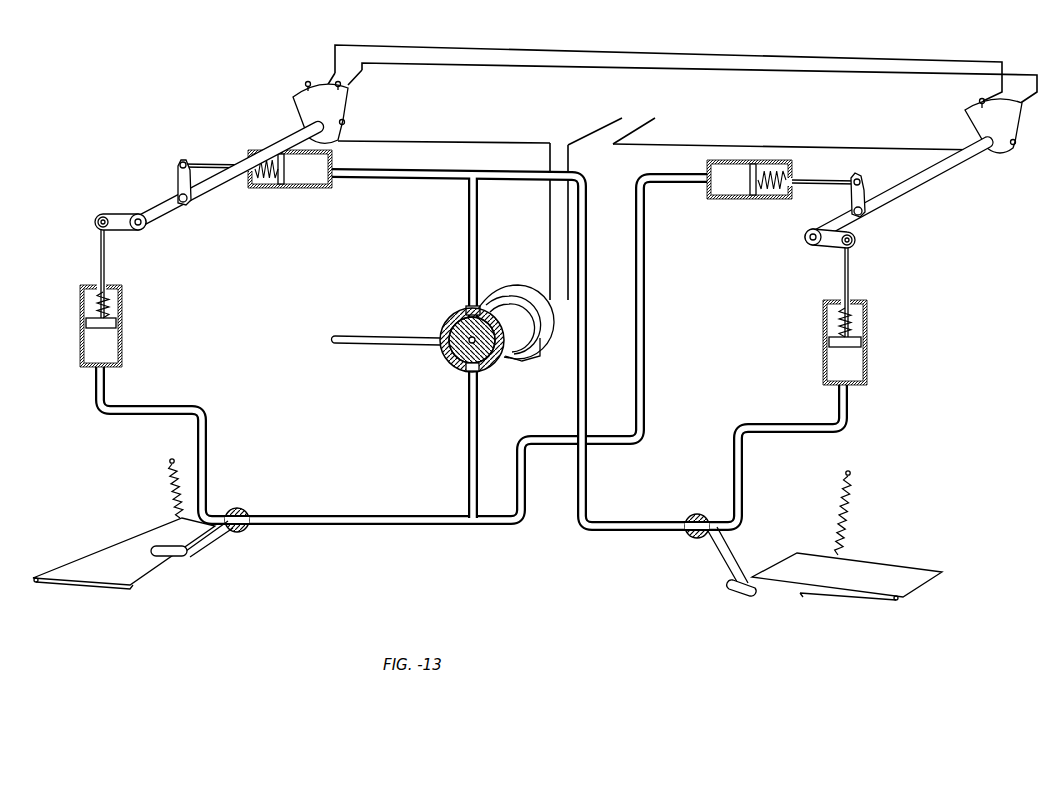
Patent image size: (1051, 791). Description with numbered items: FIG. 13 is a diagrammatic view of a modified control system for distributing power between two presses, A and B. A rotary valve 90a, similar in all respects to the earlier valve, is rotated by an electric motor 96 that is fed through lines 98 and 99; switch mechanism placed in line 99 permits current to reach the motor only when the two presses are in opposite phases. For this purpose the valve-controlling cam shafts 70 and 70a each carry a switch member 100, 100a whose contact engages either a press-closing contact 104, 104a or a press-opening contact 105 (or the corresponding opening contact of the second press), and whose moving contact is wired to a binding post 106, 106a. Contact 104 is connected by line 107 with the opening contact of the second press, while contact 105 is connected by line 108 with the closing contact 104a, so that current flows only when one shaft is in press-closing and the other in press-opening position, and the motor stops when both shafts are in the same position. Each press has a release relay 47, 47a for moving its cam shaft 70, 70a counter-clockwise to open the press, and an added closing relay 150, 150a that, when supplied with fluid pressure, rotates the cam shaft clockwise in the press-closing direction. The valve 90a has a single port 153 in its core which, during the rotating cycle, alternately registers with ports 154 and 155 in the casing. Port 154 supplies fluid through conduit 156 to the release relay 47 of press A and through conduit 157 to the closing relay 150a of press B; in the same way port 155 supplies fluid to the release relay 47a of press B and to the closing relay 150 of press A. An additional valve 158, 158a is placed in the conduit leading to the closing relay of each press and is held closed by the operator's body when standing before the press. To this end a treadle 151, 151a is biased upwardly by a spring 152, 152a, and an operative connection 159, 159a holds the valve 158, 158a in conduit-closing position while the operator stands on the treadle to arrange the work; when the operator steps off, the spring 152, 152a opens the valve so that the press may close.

The release relay 47 is at (290, 187).
The release relay 47a is at (744, 198).
The cam shaft 70 is at (163, 209).
The cam shaft 70a is at (892, 197).
The rotary valve 90a is at (454, 322).
The electric motor 96 is at (533, 318).
The line 98 is at (606, 125).
The line 99 is at (652, 124).
The switch member 100 is at (346, 103).
The switch member 100a is at (977, 118).
The press-closing contact 104 is at (341, 84).
The press-closing contact 104a is at (980, 101).
The press-opening contact 105 is at (306, 84).
The binding post 106 is at (345, 122).
The binding post 106a is at (1016, 144).
The line 107 is at (558, 67).
The line 108 is at (599, 53).
The closing relay 150 is at (121, 329).
The closing relay 150a is at (823, 318).
The treadle 151 is at (115, 547).
The treadle 151a is at (887, 573).
The spring 152 is at (168, 483).
The spring 152a is at (850, 502).
The port 153 is at (489, 361).
The port 154 is at (479, 306).
The port 155 is at (464, 369).
The conduit 156 is at (443, 172).
The conduit 157 is at (580, 340).
The valve 158 is at (236, 508).
The valve 158a is at (698, 513).
The operative connection 159 is at (210, 537).
The operative connection 159a is at (712, 555).